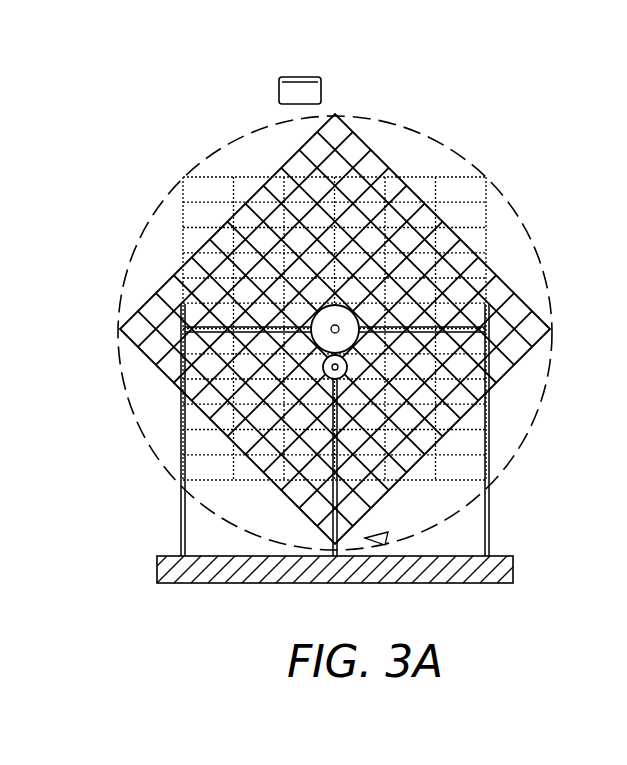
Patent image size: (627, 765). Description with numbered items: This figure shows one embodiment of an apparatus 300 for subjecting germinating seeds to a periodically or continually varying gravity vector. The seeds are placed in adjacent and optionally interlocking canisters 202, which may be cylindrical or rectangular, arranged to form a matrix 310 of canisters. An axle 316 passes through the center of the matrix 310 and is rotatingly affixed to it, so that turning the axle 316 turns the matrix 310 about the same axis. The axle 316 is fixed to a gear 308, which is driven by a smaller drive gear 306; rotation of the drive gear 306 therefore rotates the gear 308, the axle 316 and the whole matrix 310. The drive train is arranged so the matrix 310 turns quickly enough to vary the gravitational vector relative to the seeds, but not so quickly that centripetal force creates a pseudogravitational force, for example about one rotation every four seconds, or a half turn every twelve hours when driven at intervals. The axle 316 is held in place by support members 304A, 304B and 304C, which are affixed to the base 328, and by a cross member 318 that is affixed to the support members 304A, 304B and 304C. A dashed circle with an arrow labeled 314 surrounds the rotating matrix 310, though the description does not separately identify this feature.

The panel assembly 300 is at (184, 138).
The canisters 202 is at (327, 83).
The axle 316 is at (338, 326).
The matrix 310 is at (418, 208).
The rotation path 314 is at (537, 251).
The cross member 318 is at (492, 360).
The gear 308 is at (312, 290).
The drive gear 306 is at (323, 376).
The support member 304A is at (181, 527).
The support member 304B is at (489, 514).
The support member 304C is at (338, 498).
The base 328 is at (513, 572).